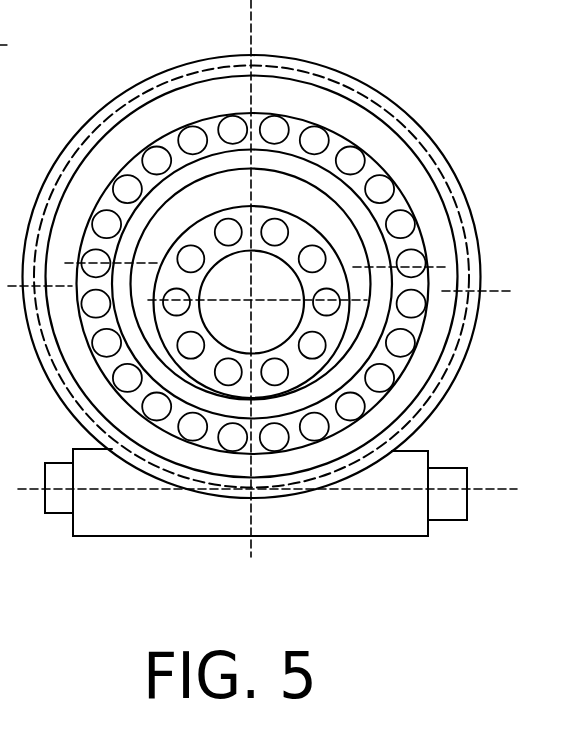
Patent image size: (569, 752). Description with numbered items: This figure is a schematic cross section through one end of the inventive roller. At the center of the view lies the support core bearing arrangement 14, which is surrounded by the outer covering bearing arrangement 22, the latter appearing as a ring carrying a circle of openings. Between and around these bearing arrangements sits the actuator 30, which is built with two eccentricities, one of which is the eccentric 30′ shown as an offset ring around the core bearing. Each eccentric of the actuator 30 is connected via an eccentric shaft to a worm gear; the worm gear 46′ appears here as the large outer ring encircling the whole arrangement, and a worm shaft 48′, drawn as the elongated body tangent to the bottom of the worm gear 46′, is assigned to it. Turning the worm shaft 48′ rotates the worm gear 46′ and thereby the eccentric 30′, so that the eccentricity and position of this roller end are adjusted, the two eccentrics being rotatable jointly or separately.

The support core bearing arrangement 14 is at (215, 227).
The outer covering bearing arrangement 22 is at (205, 130).
The actuator 30 is at (325, 165).
The eccentric 30′ is at (330, 225).
The worm gear 46′ is at (442, 390).
The worm shaft 48′ is at (125, 502).